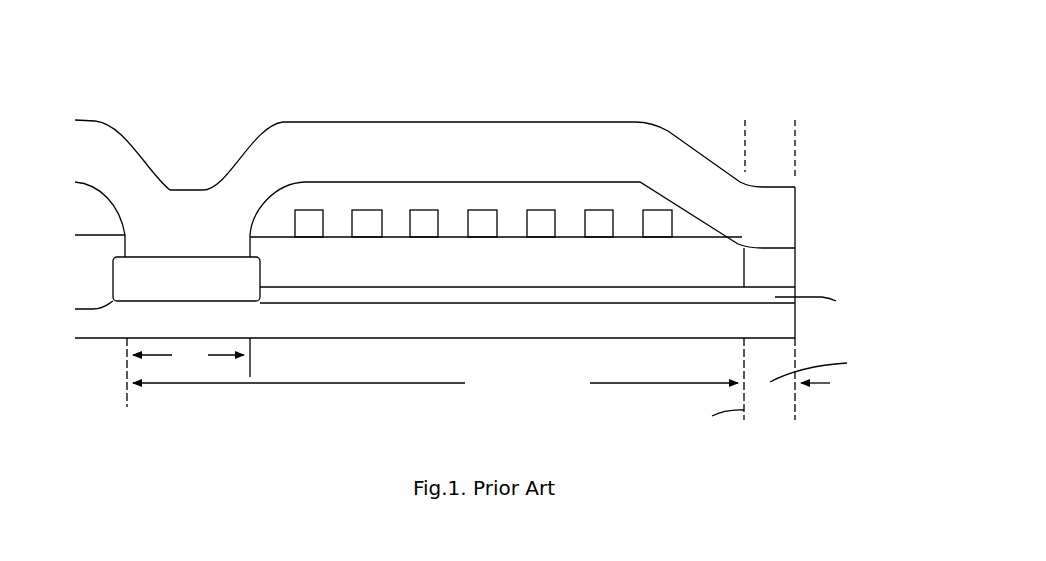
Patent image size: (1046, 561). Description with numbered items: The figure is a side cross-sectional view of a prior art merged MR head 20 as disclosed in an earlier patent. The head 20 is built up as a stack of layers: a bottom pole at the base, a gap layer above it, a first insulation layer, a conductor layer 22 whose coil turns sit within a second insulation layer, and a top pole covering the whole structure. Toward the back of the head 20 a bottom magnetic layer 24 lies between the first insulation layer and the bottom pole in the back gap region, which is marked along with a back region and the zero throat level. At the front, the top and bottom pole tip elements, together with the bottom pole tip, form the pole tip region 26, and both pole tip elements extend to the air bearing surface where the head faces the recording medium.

The head 20 is at (565, 54).
The conductor layer 22 is at (538, 208).
The bottom magnetic layer 24 is at (260, 273).
The pole tip region 26 is at (795, 411).